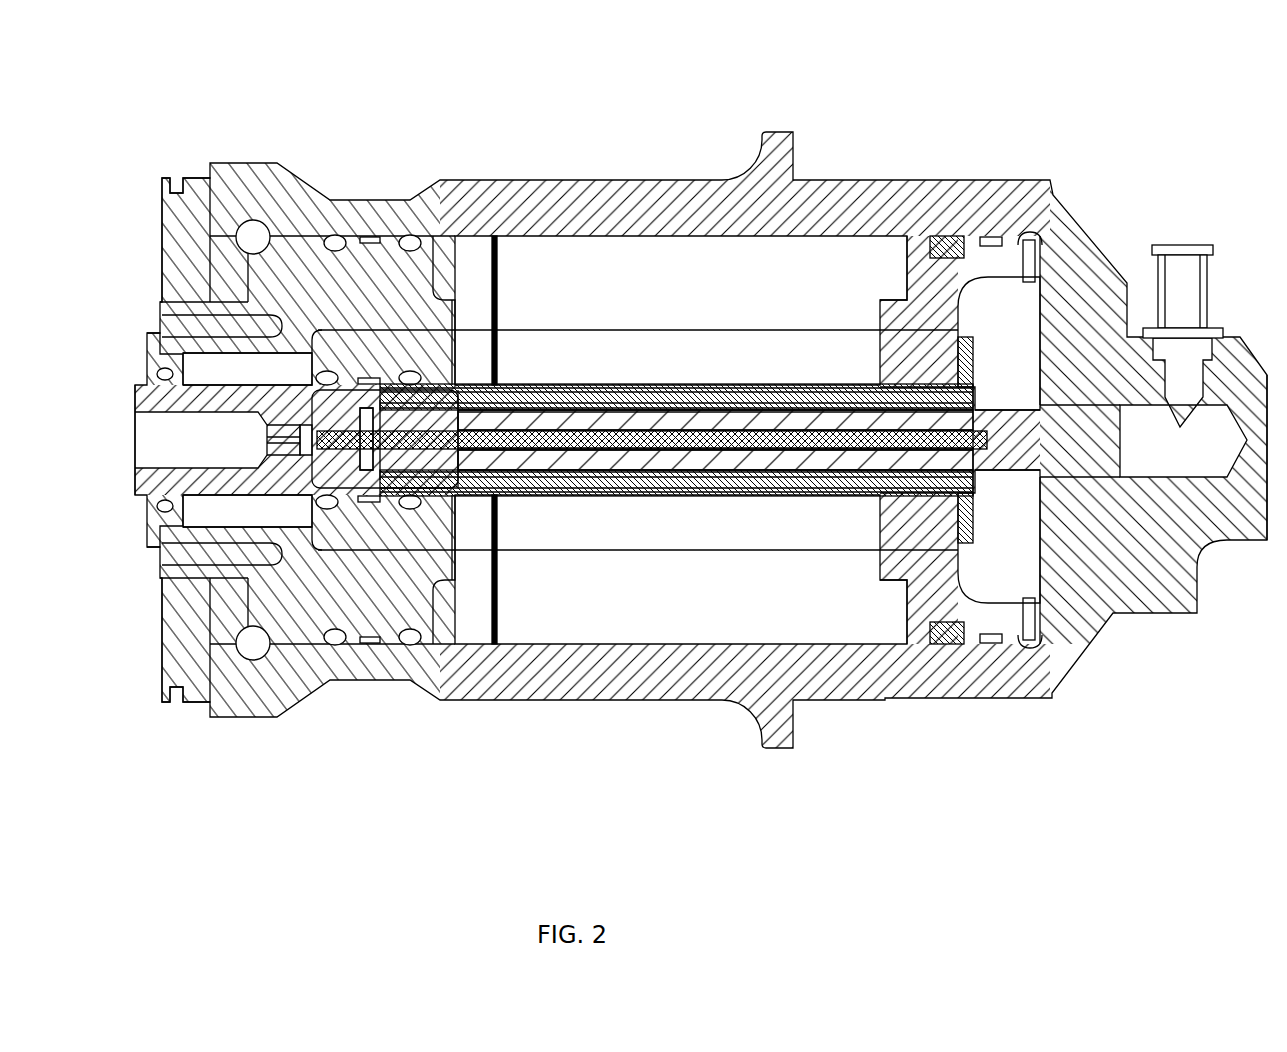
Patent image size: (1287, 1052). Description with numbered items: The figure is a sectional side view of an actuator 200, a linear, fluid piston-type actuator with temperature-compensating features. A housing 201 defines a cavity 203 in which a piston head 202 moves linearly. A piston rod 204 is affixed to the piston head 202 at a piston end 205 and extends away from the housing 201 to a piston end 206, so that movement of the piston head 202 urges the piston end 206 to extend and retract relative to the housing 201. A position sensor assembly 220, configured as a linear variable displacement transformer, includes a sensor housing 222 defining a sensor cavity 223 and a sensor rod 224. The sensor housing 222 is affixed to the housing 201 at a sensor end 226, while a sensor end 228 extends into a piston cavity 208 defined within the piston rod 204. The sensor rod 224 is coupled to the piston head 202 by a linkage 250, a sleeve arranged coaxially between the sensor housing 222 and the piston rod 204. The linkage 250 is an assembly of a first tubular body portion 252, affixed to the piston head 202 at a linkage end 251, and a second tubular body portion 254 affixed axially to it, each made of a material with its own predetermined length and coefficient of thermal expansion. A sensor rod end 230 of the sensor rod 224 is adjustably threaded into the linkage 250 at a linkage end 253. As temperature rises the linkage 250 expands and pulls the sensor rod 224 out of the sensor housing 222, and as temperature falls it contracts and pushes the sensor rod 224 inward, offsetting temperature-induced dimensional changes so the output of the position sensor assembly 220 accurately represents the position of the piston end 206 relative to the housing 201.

The actuator 200 is at (205, 68).
The housing 201 is at (1197, 613).
The piston head 202 is at (880, 578).
The cavity 203 is at (537, 625).
The piston rod 204 is at (655, 497).
The piston end 205 is at (880, 497).
The piston end 206 is at (155, 495).
The piston cavity 208 is at (312, 470).
The position sensor assembly 220 is at (995, 485).
The sensor housing 222 is at (993, 407).
The sensor cavity 223 is at (990, 442).
The sensor rod 224 is at (688, 470).
The sensor end 226 is at (1037, 407).
The sensor end 228 is at (352, 440).
The sensor rod end 230 is at (438, 468).
The linkage 250 is at (656, 323).
The linkage end 251 is at (958, 375).
The first tubular body portion 252 is at (690, 397).
The linkage end 253 is at (315, 405).
The second tubular body portion 254 is at (468, 397).